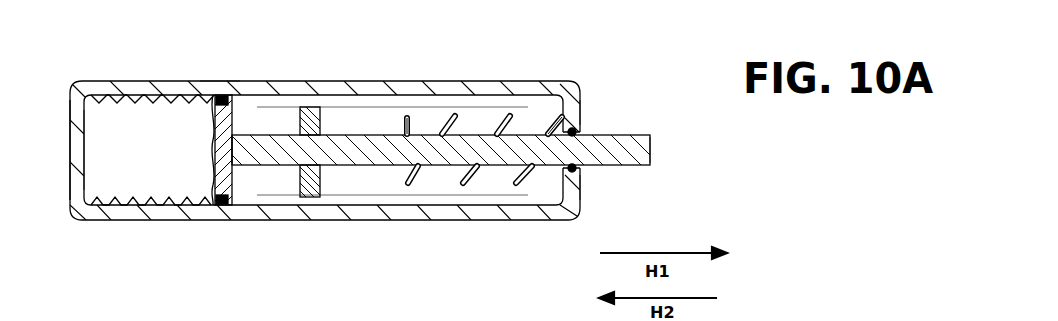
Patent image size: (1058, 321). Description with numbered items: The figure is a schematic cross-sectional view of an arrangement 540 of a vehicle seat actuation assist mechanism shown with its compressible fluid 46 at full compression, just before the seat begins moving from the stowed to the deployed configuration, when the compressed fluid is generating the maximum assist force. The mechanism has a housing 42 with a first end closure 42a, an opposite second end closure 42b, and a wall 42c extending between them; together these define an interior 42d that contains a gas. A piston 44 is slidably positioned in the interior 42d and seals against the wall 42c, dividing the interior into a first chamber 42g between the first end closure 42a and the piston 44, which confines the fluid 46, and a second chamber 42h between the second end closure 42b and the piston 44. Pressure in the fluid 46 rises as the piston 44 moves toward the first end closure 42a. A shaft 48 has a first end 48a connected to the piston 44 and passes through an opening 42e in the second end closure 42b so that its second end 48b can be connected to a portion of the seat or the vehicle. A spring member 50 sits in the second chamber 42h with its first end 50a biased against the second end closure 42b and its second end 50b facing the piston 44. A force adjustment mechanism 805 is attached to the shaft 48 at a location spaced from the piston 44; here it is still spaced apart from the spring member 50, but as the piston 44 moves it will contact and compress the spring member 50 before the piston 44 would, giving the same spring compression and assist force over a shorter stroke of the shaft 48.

The housing 42 is at (400, 76).
The first end closure 42a is at (70, 148).
The second end closure 42b is at (583, 111).
The wall 42c is at (222, 93).
The interior 42d is at (291, 106).
The opening 42e is at (586, 172).
The first chamber 42g is at (94, 93).
The second chamber 42h is at (370, 105).
The piston 44 is at (217, 120).
The compressible fluid 46 is at (73, 171).
The shaft 48 is at (620, 135).
The first end of the shaft 48a is at (247, 147).
The second end of the shaft 48b is at (631, 167).
The spring member 50 is at (476, 170).
The first end of the spring member 50a is at (558, 128).
The second end of the spring member 50b is at (408, 116).
The seat actuation assist mechanism arrangement 540 is at (717, 48).
The force adjustment mechanism 805 is at (311, 186).